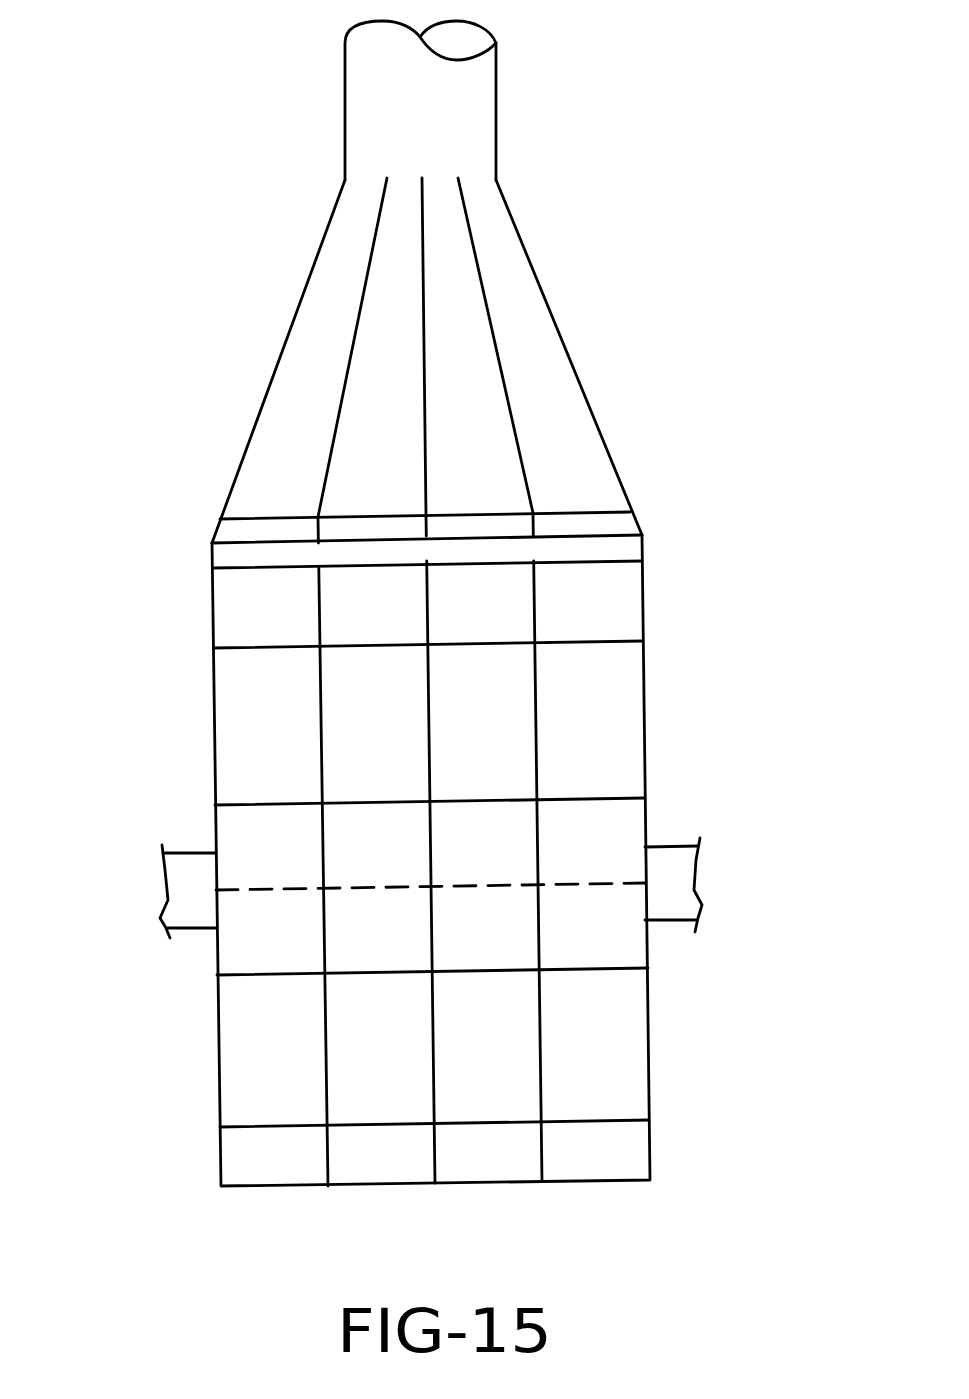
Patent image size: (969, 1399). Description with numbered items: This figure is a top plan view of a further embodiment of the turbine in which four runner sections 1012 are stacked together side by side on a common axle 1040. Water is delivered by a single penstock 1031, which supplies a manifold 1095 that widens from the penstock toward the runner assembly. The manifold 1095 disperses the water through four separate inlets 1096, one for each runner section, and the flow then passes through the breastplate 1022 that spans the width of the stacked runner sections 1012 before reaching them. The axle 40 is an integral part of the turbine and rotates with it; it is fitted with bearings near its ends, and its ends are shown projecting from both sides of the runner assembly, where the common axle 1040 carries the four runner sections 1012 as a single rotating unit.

The penstock 1031 is at (363, 162).
The manifold 1095 is at (290, 325).
The inlets 1096 is at (550, 512).
The breastplate 1022 is at (222, 529).
The runner sections 1012 is at (620, 1235).
The axle 40 is at (188, 879).
The common axle 1040 is at (672, 858).